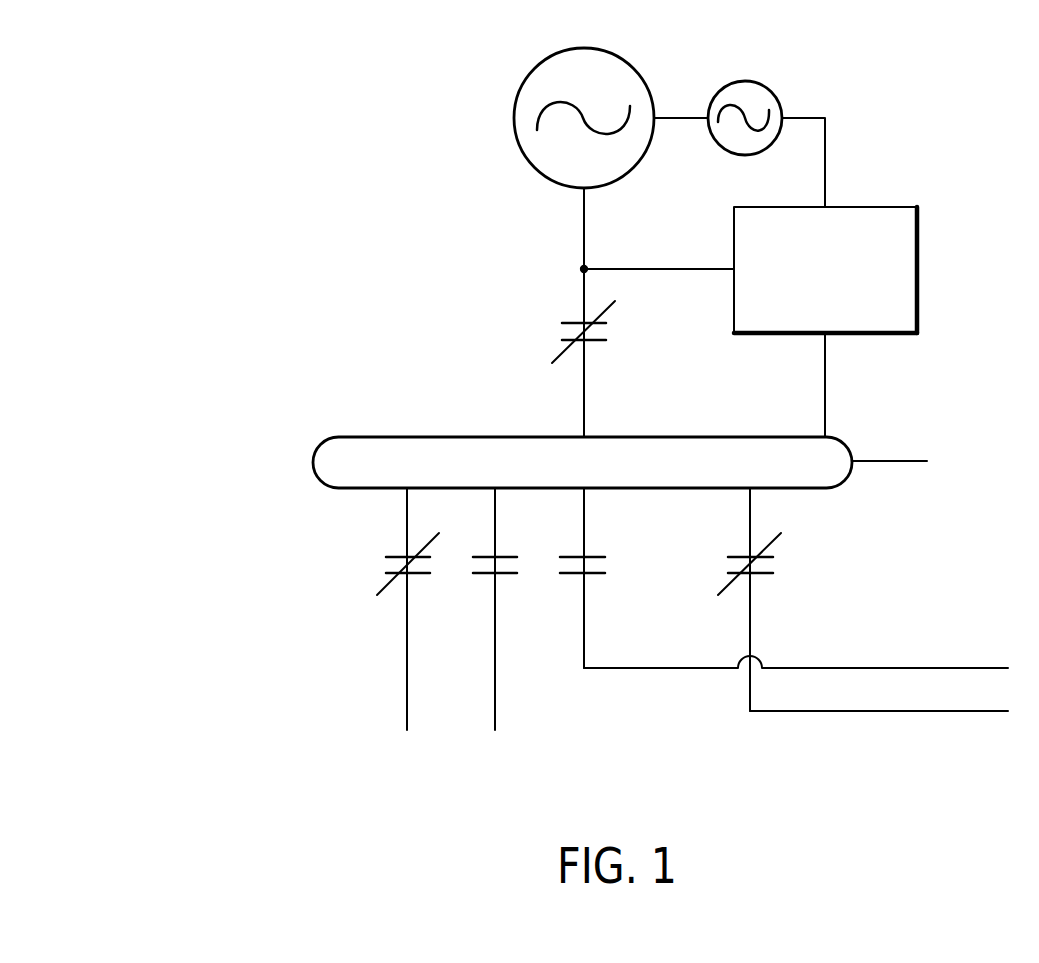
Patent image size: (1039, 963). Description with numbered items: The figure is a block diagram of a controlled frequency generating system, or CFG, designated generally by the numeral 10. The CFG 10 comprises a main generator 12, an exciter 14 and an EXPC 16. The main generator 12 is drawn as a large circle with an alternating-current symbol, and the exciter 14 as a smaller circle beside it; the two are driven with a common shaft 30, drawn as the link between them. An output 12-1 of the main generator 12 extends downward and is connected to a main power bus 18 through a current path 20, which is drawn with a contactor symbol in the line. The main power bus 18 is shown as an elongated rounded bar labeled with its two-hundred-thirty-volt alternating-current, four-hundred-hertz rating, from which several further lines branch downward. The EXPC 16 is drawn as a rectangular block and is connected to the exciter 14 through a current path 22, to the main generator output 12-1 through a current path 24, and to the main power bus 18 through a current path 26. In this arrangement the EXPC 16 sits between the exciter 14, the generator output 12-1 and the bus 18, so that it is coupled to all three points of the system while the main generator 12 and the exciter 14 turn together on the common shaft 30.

The controlled frequency generating system (CFG) 10 is at (307, 170).
The main generator 12 is at (513, 118).
The main generator output 12-1 is at (584, 190).
The exciter 14 is at (745, 80).
The EXPC 16 is at (917, 268).
The main power bus 18 is at (852, 480).
The current path 20 is at (584, 302).
The current path 22 is at (825, 155).
The current path 24 is at (663, 270).
The current path 26 is at (825, 410).
The common shaft 30 is at (678, 118).